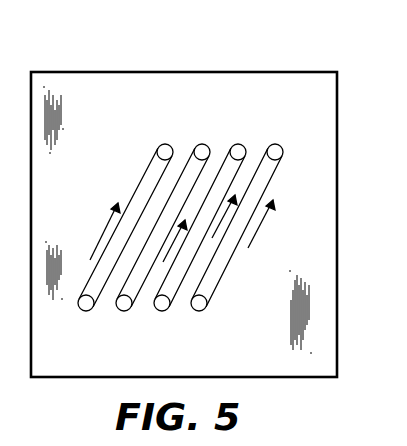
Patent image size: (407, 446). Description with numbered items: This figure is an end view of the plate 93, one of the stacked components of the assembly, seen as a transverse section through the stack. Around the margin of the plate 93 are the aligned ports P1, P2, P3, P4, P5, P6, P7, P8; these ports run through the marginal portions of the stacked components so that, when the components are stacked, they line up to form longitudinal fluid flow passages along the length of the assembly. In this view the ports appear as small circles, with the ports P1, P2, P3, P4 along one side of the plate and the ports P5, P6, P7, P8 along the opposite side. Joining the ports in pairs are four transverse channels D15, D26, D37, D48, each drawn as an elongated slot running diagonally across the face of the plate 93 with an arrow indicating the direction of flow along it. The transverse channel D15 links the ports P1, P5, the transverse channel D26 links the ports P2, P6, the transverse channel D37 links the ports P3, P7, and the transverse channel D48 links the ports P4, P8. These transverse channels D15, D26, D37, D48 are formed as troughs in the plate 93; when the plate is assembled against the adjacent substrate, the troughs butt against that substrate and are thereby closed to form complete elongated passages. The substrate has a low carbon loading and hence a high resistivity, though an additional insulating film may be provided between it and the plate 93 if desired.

The plate 93 is at (107, 72).
The port P1 is at (282, 141).
The port P2 is at (246, 144).
The port P3 is at (209, 140).
The port P4 is at (170, 143).
The port P5 is at (198, 311).
The port P6 is at (160, 311).
The port P7 is at (122, 311).
The port P8 is at (84, 311).
The transverse channel D15 is at (283, 162).
The transverse channel D26 is at (232, 144).
The transverse channel D37 is at (193, 141).
The transverse channel D48 is at (150, 165).